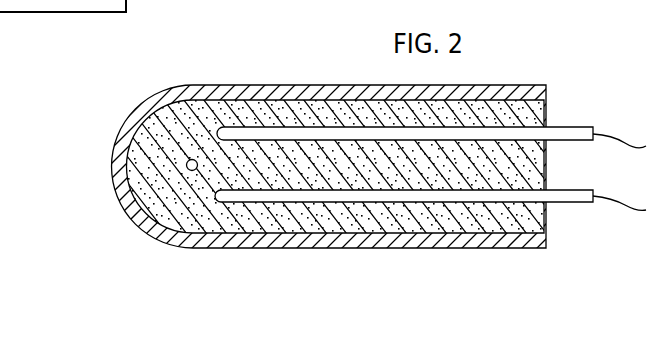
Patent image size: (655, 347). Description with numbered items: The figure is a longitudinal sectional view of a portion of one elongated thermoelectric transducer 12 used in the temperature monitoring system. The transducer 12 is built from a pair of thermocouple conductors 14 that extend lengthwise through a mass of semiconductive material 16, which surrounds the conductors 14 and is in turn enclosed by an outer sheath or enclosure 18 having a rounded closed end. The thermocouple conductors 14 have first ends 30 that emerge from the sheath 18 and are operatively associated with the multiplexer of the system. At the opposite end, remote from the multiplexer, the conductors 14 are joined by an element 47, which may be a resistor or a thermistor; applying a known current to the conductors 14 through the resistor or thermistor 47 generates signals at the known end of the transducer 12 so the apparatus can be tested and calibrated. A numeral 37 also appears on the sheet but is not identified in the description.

The thermoelectric transducer 12 is at (271, 81).
The thermocouple conductors 14 is at (357, 127).
The mass of semiconductive material 16 is at (526, 109).
The outer sheath 18 is at (130, 103).
The first ends 30 is at (618, 138).
The adjacent element 37 is at (624, 8).
The resistor or thermistor 47 is at (191, 159).